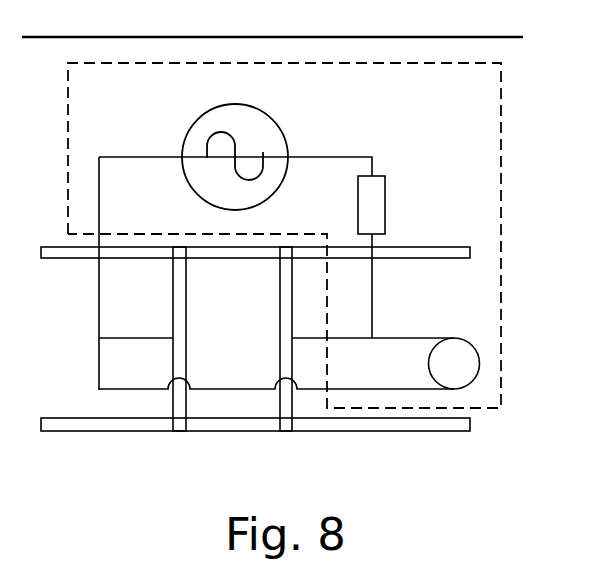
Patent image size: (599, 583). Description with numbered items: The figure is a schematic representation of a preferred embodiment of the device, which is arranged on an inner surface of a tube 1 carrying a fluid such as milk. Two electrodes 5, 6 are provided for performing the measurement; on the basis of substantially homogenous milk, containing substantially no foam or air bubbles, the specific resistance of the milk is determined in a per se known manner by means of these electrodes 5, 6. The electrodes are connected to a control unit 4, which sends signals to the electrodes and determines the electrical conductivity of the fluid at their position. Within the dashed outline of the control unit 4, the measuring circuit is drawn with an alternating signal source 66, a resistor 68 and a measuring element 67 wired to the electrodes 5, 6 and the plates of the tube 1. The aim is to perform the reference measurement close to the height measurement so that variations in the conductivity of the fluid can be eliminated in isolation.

The tube 1 is at (337, 423).
The control unit 4 is at (501, 188).
The electrode 5 is at (178, 292).
The electrode 6 is at (286, 338).
The AC voltage source 66 is at (268, 114).
The detector 67 is at (454, 363).
The resistor 68 is at (370, 205).